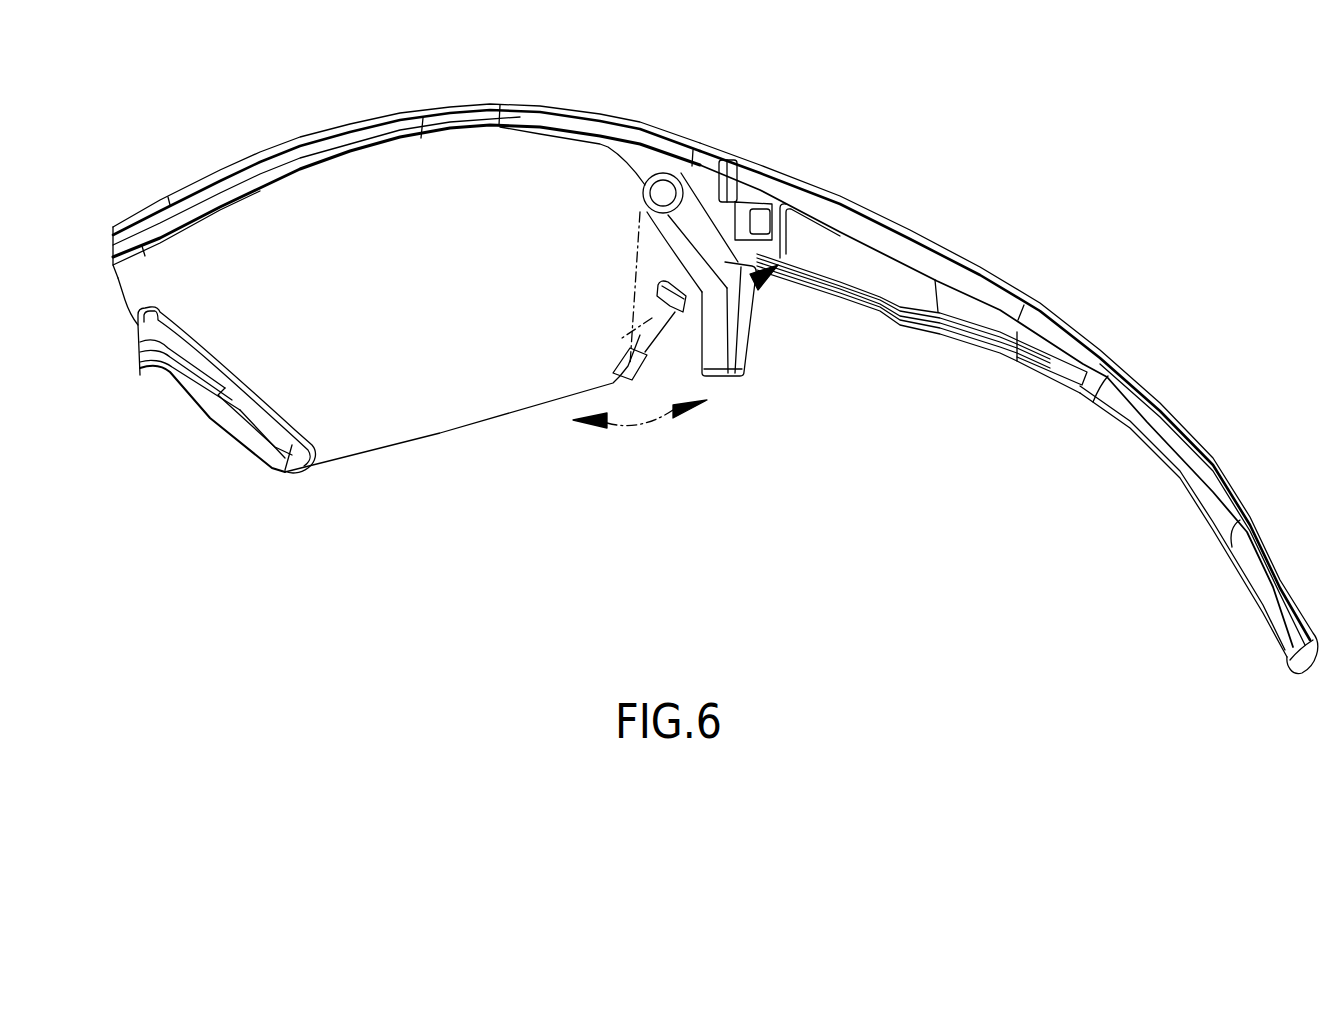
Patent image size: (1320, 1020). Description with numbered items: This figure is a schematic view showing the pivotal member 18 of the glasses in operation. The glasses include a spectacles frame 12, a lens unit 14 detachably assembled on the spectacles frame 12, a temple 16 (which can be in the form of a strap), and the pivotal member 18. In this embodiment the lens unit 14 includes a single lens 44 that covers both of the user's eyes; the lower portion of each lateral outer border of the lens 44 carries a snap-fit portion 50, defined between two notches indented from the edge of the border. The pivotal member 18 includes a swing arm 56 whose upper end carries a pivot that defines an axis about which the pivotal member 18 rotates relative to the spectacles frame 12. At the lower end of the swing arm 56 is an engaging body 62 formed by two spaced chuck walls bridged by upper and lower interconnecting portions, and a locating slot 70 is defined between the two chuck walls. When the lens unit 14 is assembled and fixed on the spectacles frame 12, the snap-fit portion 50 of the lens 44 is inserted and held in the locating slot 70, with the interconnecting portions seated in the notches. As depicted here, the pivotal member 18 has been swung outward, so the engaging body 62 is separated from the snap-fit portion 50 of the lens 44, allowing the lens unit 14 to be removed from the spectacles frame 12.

The spectacles frame 12 is at (168, 203).
The lens unit 14 is at (343, 513).
The temple 16 is at (1063, 337).
The pivotal member 18 is at (797, 258).
The lens 44 is at (433, 413).
The snap-fit portion 50 is at (627, 327).
The swing arm 56 is at (737, 357).
The engaging body 62 is at (737, 370).
The locating slot 70 is at (733, 320).